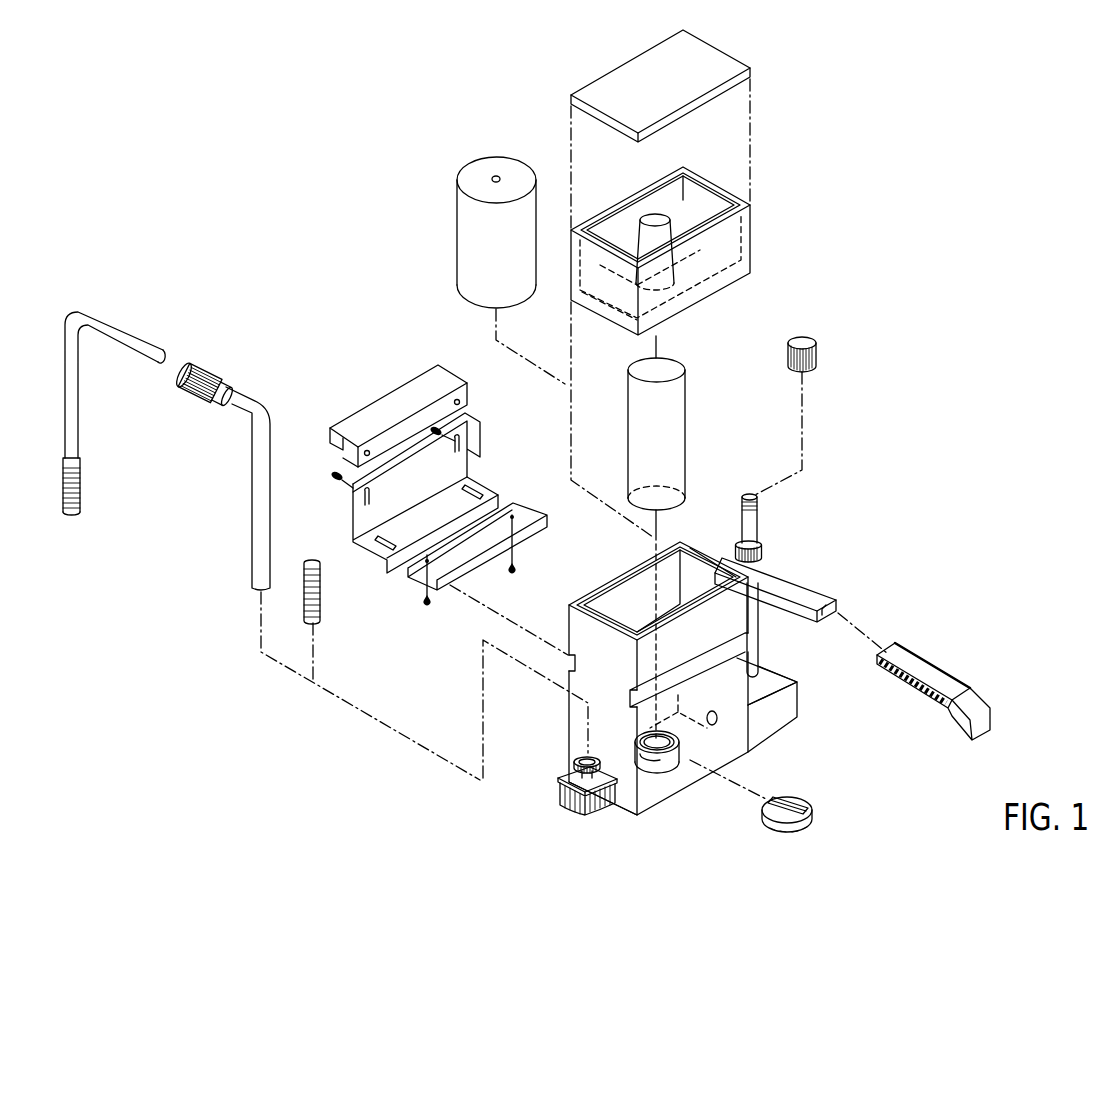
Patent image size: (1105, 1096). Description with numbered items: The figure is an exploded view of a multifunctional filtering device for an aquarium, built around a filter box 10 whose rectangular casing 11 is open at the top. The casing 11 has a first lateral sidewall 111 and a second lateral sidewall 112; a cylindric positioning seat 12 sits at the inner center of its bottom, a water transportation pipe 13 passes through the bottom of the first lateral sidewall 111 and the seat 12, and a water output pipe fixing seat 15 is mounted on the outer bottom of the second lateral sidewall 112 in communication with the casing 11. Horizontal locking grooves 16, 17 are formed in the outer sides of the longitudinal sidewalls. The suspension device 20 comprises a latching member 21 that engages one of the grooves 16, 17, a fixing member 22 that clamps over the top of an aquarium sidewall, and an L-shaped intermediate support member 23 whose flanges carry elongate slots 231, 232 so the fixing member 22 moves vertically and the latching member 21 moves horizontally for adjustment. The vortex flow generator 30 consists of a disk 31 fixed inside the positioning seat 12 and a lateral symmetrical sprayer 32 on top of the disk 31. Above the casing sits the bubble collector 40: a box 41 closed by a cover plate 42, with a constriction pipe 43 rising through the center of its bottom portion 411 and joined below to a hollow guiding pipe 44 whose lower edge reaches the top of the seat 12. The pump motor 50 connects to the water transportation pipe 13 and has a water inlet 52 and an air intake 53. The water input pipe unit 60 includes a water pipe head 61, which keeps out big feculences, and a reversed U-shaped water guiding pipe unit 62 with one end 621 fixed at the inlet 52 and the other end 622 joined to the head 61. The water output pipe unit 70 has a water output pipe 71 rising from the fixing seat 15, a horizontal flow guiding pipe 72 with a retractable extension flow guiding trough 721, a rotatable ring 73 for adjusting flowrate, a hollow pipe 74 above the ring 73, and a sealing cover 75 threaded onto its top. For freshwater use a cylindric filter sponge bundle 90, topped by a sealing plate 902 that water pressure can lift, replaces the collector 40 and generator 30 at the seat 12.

The filter box 10 is at (654, 842).
The rectangular casing 11 is at (590, 598).
The first lateral sidewall 111 is at (627, 810).
The second lateral sidewall 112 is at (703, 547).
The positioning seat 12 is at (703, 784).
The water transportation pipe 13 is at (669, 795).
The water output pipe fixing seat 15 is at (758, 730).
The locking groove 16 is at (568, 668).
The locking groove 17 is at (762, 662).
The suspension device 20 is at (370, 345).
The latching member 21 is at (546, 533).
The fixing member 22 is at (352, 423).
The L-shaped intermediate support member 23 is at (354, 537).
The elongate slots 231 is at (462, 440).
The elongate slots 232 is at (382, 541).
The vortex flow generator 30 is at (772, 850).
The disk 31 is at (797, 828).
The lateral symmetrical sprayer 32 is at (803, 805).
The bubble collector 40 is at (795, 168).
The box 41 is at (747, 233).
The bottom portion 411 is at (605, 293).
The cover plate 42 is at (735, 63).
The constriction pipe 43 is at (645, 218).
The hollow guiding pipe 44 is at (684, 427).
The pump motor 50 is at (588, 815).
The water inlet 52 is at (572, 766).
The air intake 53 is at (562, 787).
The water input pipe unit 60 is at (166, 290).
The water pipe head 61 is at (74, 514).
The water guiding pipe unit 62 is at (213, 364).
The end of water guiding pipe unit 621 is at (256, 590).
The other end of water guiding pipe unit 622 is at (77, 438).
The water output pipe unit 70 is at (848, 498).
The water output pipe 71 is at (759, 618).
The horizontal flow guiding pipe 72 is at (825, 590).
The extension flow guiding trough 721 is at (985, 693).
The rotatable ring 73 is at (763, 553).
The hollow pipe 74 is at (753, 528).
The sealing cover 75 is at (808, 343).
The filter sponge bundle 90 is at (467, 268).
The sealing plate 902 is at (494, 177).